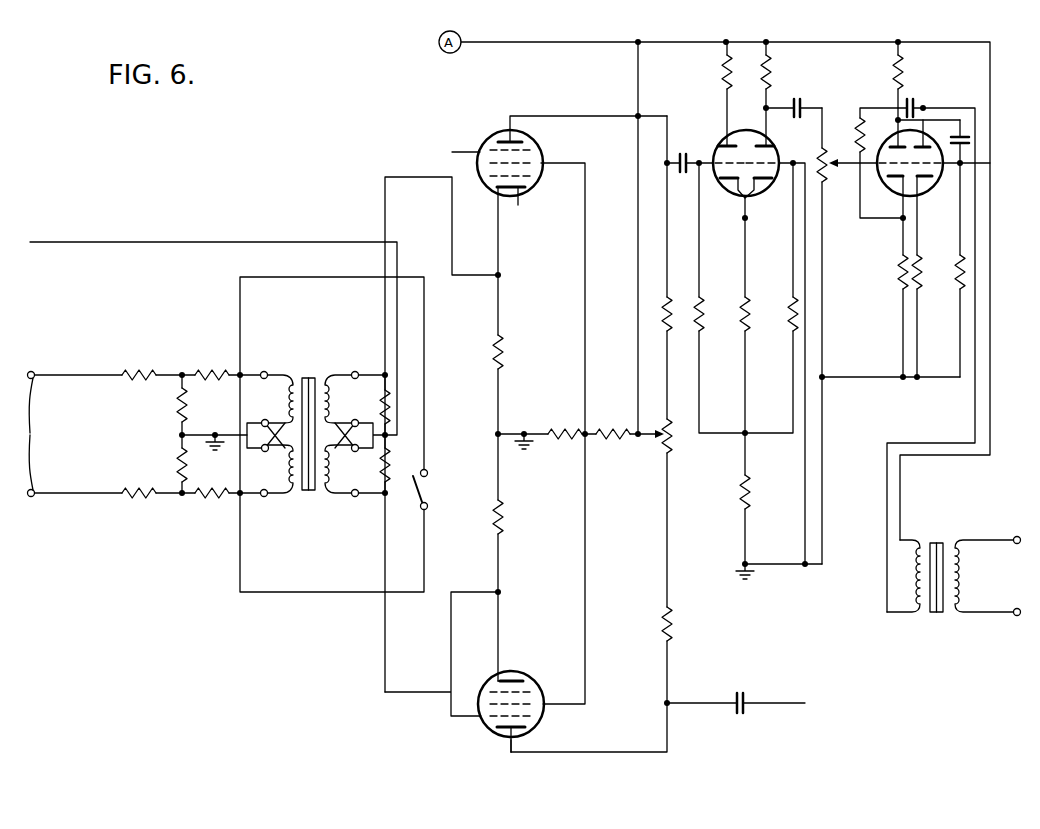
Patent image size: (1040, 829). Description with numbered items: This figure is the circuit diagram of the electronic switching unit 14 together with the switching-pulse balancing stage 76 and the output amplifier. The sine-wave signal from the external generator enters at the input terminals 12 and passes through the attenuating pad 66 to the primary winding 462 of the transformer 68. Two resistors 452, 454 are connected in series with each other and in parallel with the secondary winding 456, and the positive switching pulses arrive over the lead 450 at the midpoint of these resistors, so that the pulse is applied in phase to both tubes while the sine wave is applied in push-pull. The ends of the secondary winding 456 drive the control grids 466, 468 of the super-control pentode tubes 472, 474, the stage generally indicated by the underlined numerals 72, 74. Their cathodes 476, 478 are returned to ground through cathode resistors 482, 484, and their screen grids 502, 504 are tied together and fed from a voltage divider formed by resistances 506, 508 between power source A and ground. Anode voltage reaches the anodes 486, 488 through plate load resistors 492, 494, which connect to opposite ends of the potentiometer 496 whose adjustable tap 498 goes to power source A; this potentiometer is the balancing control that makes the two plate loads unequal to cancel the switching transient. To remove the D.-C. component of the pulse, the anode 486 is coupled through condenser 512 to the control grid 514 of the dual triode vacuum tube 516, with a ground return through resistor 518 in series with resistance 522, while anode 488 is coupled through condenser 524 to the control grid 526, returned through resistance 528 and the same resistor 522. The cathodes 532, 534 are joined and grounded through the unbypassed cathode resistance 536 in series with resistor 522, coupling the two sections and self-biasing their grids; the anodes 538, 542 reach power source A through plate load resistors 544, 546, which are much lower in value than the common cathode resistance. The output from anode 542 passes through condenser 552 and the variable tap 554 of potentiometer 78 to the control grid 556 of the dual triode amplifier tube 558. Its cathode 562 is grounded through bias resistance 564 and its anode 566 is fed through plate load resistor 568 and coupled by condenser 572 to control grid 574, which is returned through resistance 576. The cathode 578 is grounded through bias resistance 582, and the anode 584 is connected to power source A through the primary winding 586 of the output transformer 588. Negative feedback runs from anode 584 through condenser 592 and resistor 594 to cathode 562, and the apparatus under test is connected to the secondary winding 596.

The input terminals 12 is at (29, 434).
The electronic switching unit 14 is at (262, 652).
The attenuating pad 66 is at (146, 450).
The transformer 68 is at (306, 377).
The super-control pentode tube 72 is at (496, 108).
The super-control pentode tube 74 is at (458, 752).
The switching-pulse balancing stage 76 is at (862, 86).
The potentiometer 78 is at (830, 160).
The lead 450 is at (45, 242).
The resistor 452 is at (395, 405).
The resistor 454 is at (395, 463).
The secondary winding 456 is at (328, 402).
The primary winding 462 is at (290, 402).
The control grid 466 is at (530, 178).
The control grid 468 is at (520, 690).
The super-control pentode tube 472 is at (538, 146).
The super-control pentode tube 474 is at (540, 722).
The cathode 476 is at (519, 205).
The cathode 478 is at (514, 672).
The cathode resistor 482 is at (506, 353).
The cathode resistor 484 is at (504, 517).
The anode 486 is at (492, 138).
The anode 488 is at (504, 735).
The plate load resistor 492 is at (662, 300).
The plate load resistor 494 is at (674, 624).
The potentiometer 496 is at (672, 445).
The adjustable tap 498 is at (648, 440).
The screen grid 502 is at (492, 163).
The screen grid 504 is at (490, 716).
The resistance 506 is at (610, 430).
The resistance 508 is at (560, 430).
The condenser 512 is at (683, 154).
The control grid 514 is at (714, 155).
The dual triode vacuum tube 516 is at (746, 130).
The resistor 518 is at (706, 302).
The resistance 522 is at (751, 486).
The condenser 524 is at (740, 690).
The control grid 526 is at (774, 160).
The resistance 528 is at (790, 302).
The cathode 532 is at (732, 186).
The cathode 534 is at (760, 186).
The cathode resistance 536 is at (750, 320).
The anode 538 is at (722, 140).
The anode 542 is at (766, 144).
The plate load resistor 544 is at (724, 72).
The plate load resistor 546 is at (772, 74).
The condenser 552 is at (798, 98).
The variable tap 554 is at (838, 166).
The control grid 556 is at (888, 182).
The dual triode amplifier tube 558 is at (925, 145).
The cathode 562 is at (898, 200).
The bias resistance 564 is at (899, 266).
The anode 566 is at (862, 122).
The plate load resistor 568 is at (905, 70).
The condenser 572 is at (972, 140).
The control grid 574 is at (930, 180).
The resistance 576 is at (955, 284).
The cathode 578 is at (920, 200).
The bias resistance 582 is at (922, 266).
The anode 584 is at (962, 163).
The primary winding 586 is at (912, 563).
The output transformer 588 is at (934, 542).
The condenser 592 is at (911, 100).
The resistor 594 is at (858, 130).
The secondary winding 596 is at (962, 565).